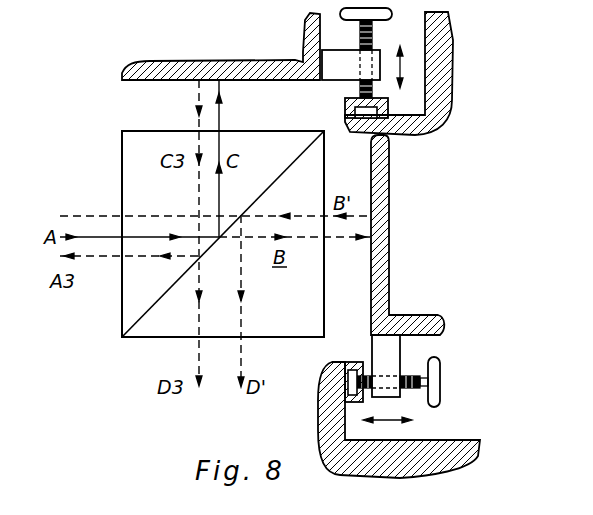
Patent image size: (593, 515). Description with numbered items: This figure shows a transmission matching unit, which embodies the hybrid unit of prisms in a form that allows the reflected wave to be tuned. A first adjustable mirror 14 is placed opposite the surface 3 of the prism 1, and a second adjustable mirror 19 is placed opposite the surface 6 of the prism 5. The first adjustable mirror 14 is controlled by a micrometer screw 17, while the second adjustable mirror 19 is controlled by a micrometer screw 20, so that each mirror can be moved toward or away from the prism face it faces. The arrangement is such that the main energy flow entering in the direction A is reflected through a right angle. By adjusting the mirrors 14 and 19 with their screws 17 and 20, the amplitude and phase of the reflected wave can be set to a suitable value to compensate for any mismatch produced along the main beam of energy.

The prism 1 is at (151, 201).
The surface 3 is at (152, 131).
The prism 5 is at (286, 313).
The surface 6 is at (326, 312).
The first adjustable mirror 14 is at (158, 62).
The micrometer screw 17 is at (374, 52).
The second adjustable mirror 19 is at (371, 166).
The micrometer screw 20 is at (402, 392).